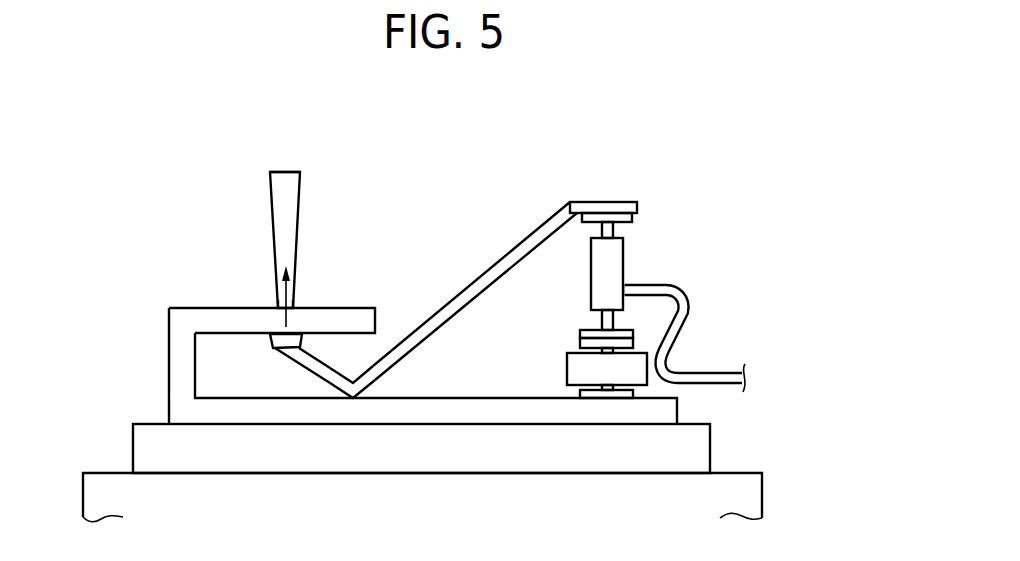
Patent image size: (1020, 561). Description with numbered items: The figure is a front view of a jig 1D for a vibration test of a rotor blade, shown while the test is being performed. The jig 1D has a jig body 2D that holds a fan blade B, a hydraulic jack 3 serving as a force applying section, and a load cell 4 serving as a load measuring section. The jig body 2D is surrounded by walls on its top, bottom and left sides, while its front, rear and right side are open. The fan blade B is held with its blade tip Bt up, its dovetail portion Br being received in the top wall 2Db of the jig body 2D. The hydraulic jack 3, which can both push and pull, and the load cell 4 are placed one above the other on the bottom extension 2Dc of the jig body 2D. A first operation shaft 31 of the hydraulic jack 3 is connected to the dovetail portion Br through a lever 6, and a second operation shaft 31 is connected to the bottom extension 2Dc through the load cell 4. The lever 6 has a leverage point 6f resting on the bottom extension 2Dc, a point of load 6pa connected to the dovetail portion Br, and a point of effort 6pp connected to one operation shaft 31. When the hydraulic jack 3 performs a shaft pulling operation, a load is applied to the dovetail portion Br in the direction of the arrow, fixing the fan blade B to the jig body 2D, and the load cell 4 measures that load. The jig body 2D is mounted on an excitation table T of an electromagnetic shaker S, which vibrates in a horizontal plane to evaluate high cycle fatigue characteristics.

The jig for the vibration test of the rotor blade 1D is at (728, 178).
The jig body 2D is at (168, 350).
The top wall 2Db is at (215, 318).
The bottom extension 2Dc is at (472, 413).
The hydraulic jack 3 is at (623, 258).
The operation shaft 31 is at (613, 232).
The load cell 4 is at (620, 372).
The lever 6 is at (495, 260).
The leverage point 6f is at (353, 400).
The point of load 6pa is at (290, 352).
The point of effort 6pp is at (610, 202).
The fan blade B is at (272, 200).
The blade tip Bt is at (287, 178).
The dovetail portion Br is at (268, 340).
The electromagnetic shaker S is at (430, 512).
The excitation table T is at (523, 455).